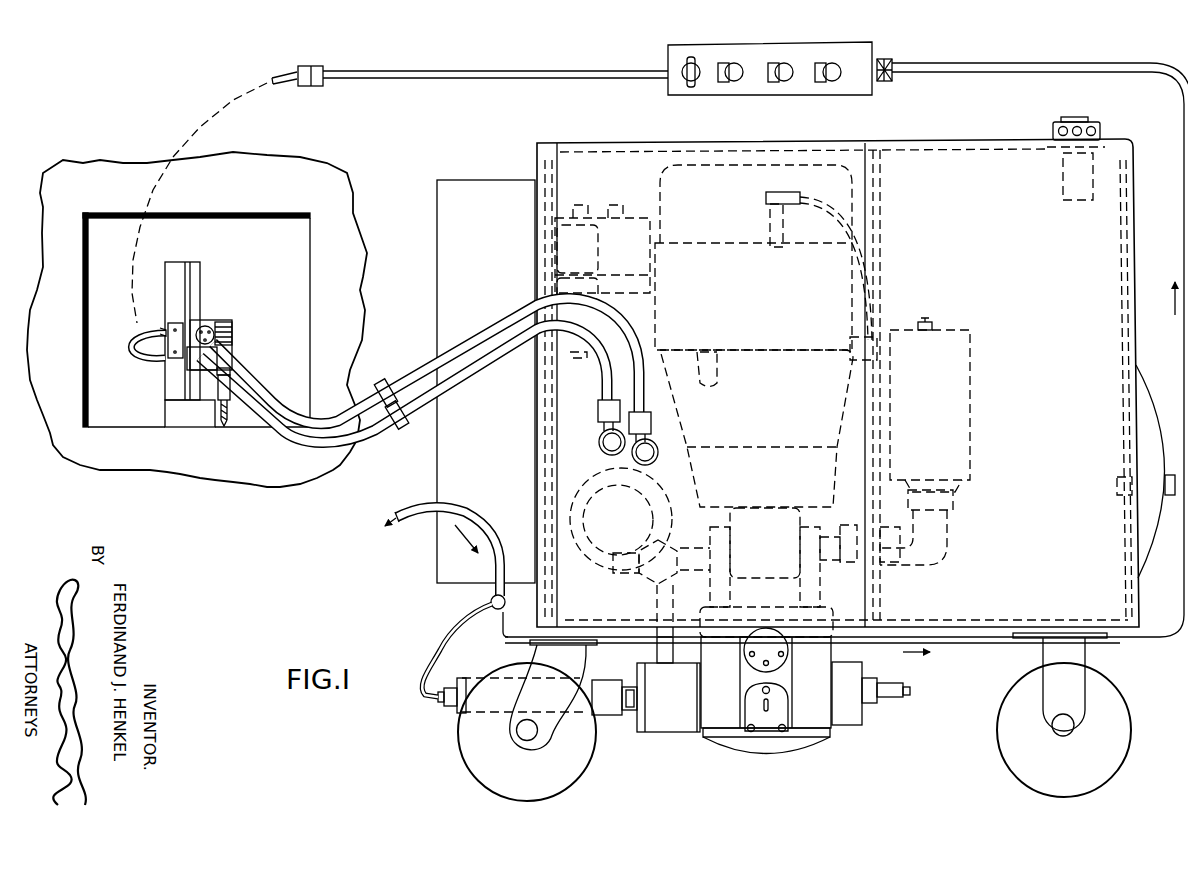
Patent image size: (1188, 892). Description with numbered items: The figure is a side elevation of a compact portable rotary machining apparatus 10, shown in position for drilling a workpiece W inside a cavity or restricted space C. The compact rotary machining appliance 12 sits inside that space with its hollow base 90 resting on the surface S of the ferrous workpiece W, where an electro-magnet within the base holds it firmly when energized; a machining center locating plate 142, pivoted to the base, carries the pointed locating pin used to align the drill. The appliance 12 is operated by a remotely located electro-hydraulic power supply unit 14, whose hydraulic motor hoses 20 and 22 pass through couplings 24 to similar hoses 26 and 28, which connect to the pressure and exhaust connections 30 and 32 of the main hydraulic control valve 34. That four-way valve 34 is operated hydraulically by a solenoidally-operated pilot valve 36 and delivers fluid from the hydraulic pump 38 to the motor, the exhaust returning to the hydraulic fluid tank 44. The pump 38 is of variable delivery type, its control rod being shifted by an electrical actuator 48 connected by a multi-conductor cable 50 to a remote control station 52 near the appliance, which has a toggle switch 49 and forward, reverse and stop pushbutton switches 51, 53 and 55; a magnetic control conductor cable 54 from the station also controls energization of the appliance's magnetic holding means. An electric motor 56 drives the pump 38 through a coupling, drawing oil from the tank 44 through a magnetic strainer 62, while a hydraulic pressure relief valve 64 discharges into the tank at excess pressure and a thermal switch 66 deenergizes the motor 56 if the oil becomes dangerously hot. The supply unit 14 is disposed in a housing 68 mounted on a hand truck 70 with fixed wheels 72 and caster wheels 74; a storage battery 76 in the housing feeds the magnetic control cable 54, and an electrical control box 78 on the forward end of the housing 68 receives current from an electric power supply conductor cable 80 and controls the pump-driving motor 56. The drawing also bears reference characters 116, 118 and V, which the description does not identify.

The compact portable rotary machining apparatus 10 is at (383, 168).
The compact rotary machining appliance 12 is at (174, 347).
The electro-hydraulic power supply unit 14 is at (614, 142).
The high pressure hydraulic hose 20 is at (292, 437).
The high pressure hydraulic hose 22 is at (292, 400).
The couplings 24 is at (386, 385).
The hydraulic hose 26 is at (492, 370).
The hydraulic hose 28 is at (520, 324).
The pressure connection 30 is at (603, 421).
The exhaust connection 32 is at (655, 421).
The main hydraulic control valve 34 is at (650, 300).
The solenoidally-operated pilot valve 36 is at (649, 255).
The hydraulic pump 38 is at (750, 745).
The hydraulic fluid tank 44 is at (1120, 256).
The electrical actuator 48 is at (459, 679).
The toggle switch 49 is at (759, 76).
The multi-conductor cable 50 is at (1036, 72).
The forward pushbutton switch 51 is at (735, 83).
The remote control station 52 is at (754, 94).
The reverse pushbutton switch 53 is at (834, 83).
The magnetic control conductor cable 54 is at (426, 71).
The stop pushbutton switch 55 is at (791, 85).
The electric motor 56 is at (862, 192).
The magnetic strainer 62 is at (968, 376).
The hydraulic pressure relief valve 64 is at (642, 542).
The thermal switch 66 is at (858, 344).
The housing 68 is at (538, 144).
The hand truck 70 is at (947, 645).
The fixed wheels 72 is at (1096, 668).
The caster wheels 74 is at (582, 690).
The storage battery 76 is at (640, 222).
The electrical control box 78 is at (437, 228).
The electric power supply conductor cable 80 is at (421, 511).
The hollow base 90 is at (185, 417).
The cable end 116 is at (284, 72).
The cable connector 118 is at (311, 66).
The machining center locating plate 142 is at (220, 420).
The workpiece W is at (84, 180).
The cavity or restricted space C is at (90, 262).
The water hose V is at (92, 324).
The workpiece surface S is at (133, 427).